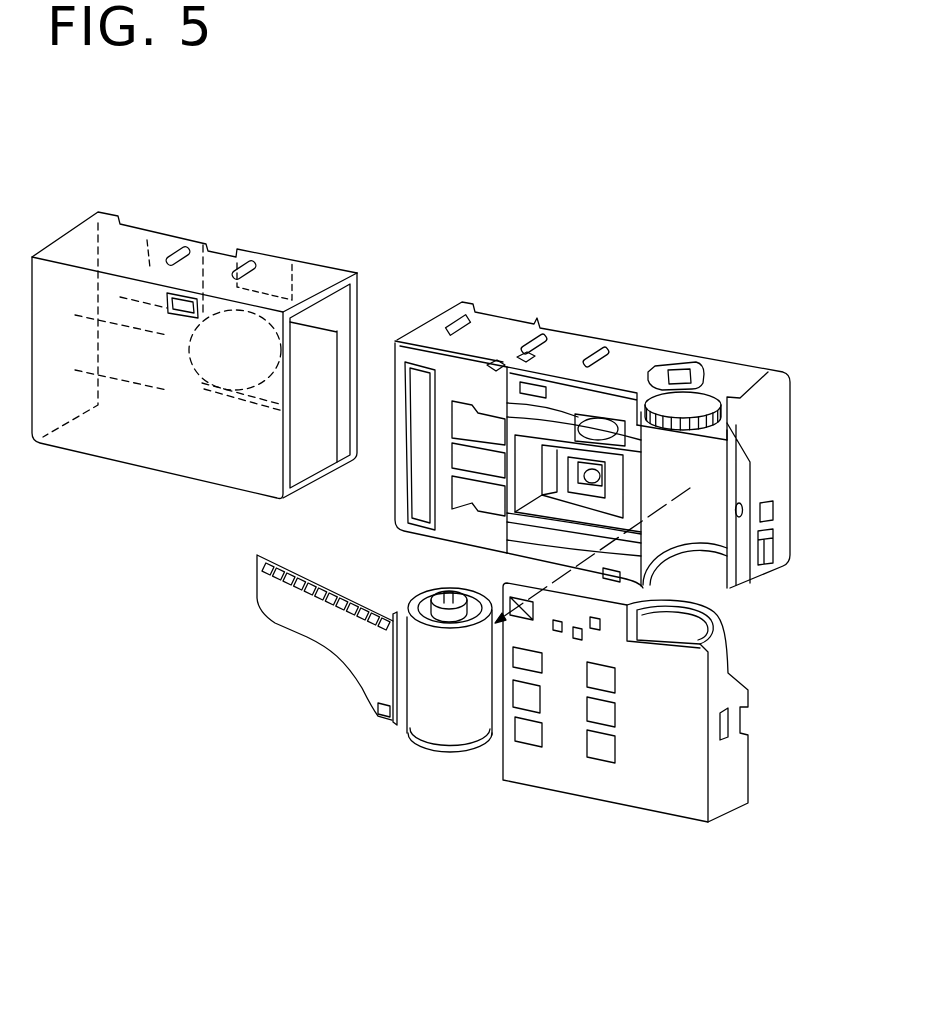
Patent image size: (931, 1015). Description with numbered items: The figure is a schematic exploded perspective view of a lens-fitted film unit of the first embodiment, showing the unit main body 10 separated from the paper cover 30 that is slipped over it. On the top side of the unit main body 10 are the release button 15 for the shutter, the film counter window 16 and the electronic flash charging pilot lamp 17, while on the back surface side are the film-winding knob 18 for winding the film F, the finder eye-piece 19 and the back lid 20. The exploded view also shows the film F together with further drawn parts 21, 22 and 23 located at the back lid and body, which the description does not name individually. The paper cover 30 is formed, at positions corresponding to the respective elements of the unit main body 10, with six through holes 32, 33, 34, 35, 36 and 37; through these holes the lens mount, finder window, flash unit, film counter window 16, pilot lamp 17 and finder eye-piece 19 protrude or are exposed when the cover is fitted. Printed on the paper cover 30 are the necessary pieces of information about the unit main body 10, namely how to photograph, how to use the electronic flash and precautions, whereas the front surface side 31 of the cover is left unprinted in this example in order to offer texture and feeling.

The unit main body 10 is at (637, 337).
The release button 15 is at (680, 357).
The film counter window 16 is at (592, 350).
The electronic flash charging pilot lamp 17 is at (527, 340).
The film-winding knob 18 is at (690, 400).
The finder eye-piece 19 is at (537, 383).
The back lid 20 is at (740, 677).
The film cartridge 21 is at (437, 727).
The engaging claw 22 is at (730, 722).
The cartridge chamber 23 is at (683, 527).
The paper cover 30 is at (293, 238).
The front surface side 31 is at (152, 462).
The through hole 32 is at (313, 397).
The through hole 33 is at (296, 265).
The through hole 34 is at (148, 240).
The through hole 35 is at (258, 258).
The through hole 36 is at (185, 250).
The through hole 37 is at (182, 292).
The film F is at (307, 640).